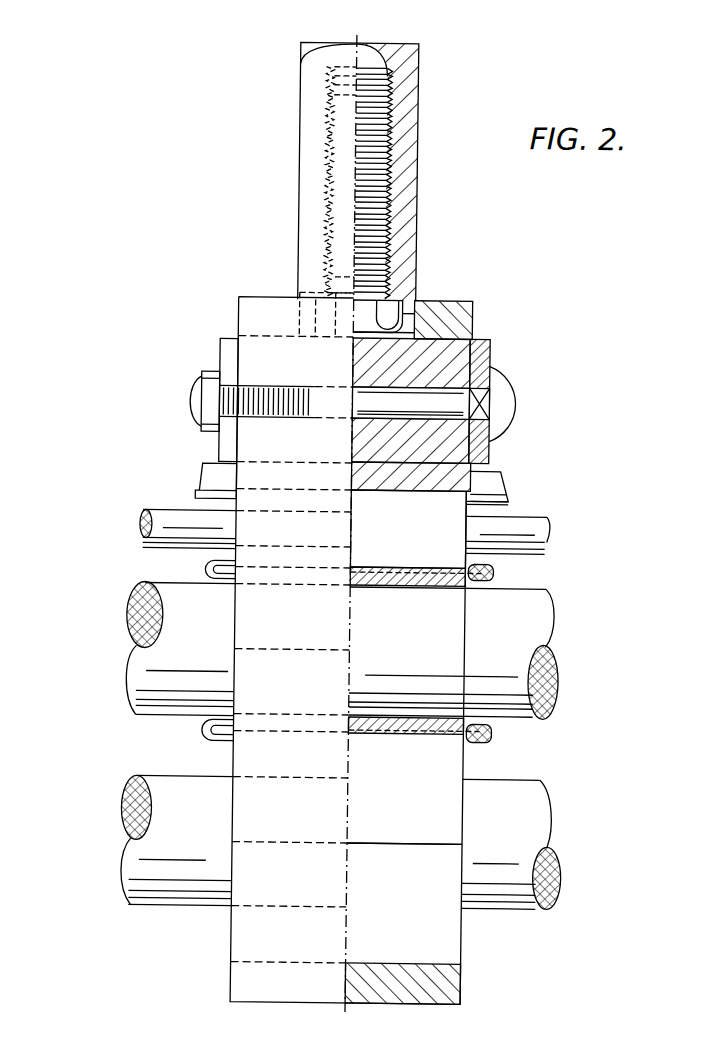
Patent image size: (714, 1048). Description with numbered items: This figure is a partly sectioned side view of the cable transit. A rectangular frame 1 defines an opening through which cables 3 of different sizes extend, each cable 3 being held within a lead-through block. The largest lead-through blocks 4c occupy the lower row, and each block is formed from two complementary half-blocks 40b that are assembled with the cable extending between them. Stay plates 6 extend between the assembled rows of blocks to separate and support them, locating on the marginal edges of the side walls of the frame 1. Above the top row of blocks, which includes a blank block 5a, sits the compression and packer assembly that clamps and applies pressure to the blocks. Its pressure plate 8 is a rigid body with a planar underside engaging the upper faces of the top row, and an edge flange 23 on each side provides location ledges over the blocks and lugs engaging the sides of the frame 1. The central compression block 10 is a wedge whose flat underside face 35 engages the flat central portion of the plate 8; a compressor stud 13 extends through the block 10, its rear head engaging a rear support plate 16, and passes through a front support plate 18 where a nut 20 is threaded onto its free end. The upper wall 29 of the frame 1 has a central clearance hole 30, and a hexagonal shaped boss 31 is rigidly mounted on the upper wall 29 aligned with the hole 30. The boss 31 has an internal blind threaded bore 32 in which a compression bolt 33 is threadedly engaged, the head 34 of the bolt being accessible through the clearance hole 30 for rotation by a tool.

The rectangular frame 1 is at (456, 990).
The cable 3 is at (523, 530).
The largest lead-through block 4c is at (437, 944).
The blank block of the top row 5a is at (388, 572).
The stay plate 6 is at (495, 571).
The pressure plate 8 is at (492, 488).
The central compression block 10 is at (441, 342).
The compressor stud 13 is at (458, 399).
The rear support plate 16 is at (486, 356).
The front support plate 18 is at (218, 352).
The nut 20 is at (207, 374).
The edge flange 23 is at (500, 504).
The upper wall 29 is at (260, 313).
The central clearance hole 30 is at (400, 322).
The hexagonal shaped boss 31 is at (305, 173).
The internal blind threaded bore 32 is at (368, 200).
The compression bolt 33 is at (370, 143).
The head of the bolt 34 is at (382, 302).
The flat underside face 35 is at (442, 473).
The half-block 40b is at (492, 636).